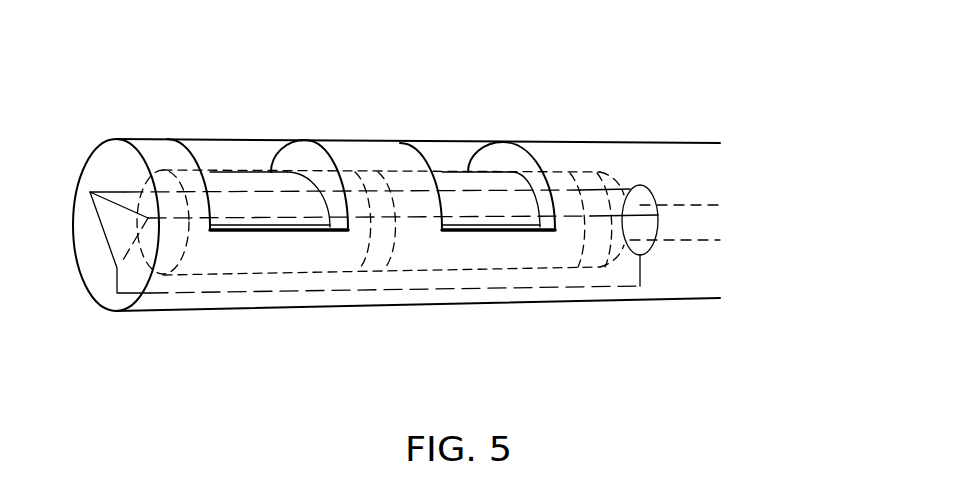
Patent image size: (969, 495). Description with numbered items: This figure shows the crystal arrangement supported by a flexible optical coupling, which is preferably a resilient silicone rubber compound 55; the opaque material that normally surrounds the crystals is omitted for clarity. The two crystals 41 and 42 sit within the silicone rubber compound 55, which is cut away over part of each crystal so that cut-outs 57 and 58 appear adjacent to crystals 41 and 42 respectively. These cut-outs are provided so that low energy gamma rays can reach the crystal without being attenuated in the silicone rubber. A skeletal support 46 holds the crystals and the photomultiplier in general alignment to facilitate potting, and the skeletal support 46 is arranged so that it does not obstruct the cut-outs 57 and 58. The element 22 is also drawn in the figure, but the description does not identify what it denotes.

The optical fiber 22 is at (690, 240).
The first slot 41 is at (237, 200).
The second slot 42 is at (458, 190).
The passage 46 is at (272, 292).
The end ring portion 55 is at (152, 155).
The first ring section 57 is at (262, 141).
The second ring section 58 is at (470, 137).